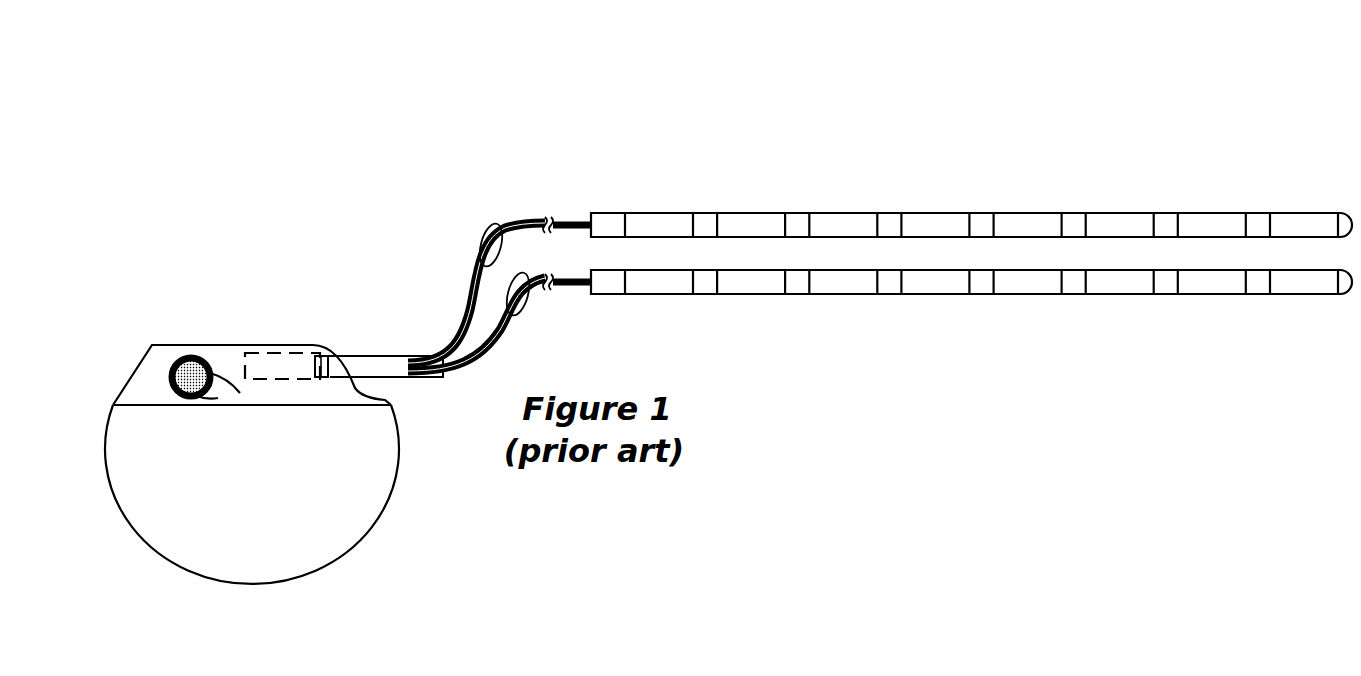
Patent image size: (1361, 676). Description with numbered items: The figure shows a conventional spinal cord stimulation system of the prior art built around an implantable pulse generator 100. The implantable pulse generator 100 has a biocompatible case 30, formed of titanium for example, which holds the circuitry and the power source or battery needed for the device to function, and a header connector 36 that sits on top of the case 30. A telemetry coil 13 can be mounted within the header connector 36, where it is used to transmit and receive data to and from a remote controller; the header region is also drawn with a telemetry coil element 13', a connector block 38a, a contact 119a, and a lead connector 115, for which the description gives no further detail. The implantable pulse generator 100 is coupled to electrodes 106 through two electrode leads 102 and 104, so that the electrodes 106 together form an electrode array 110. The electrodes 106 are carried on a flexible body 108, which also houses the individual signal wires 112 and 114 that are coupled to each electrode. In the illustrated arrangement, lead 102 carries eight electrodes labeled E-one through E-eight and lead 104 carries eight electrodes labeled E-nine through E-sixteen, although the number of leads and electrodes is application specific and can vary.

The implantable pulse generator 100 is at (205, 249).
The biocompatible case 30 is at (399, 462).
The header connector 36 is at (143, 358).
The telemetry coil 13 is at (188, 395).
The feedthrough pin 13' is at (175, 352).
The connector block 38a is at (273, 355).
The connector contact 119a is at (312, 355).
The lead connector 115 is at (307, 316).
The signal wire 112 is at (486, 232).
The signal wire 114 is at (528, 303).
The electrode array 110 is at (1099, 118).
The electrode lead 102 is at (635, 186).
The electrode lead 104 is at (676, 324).
The electrodes 106 is at (843, 212).
The flexible body 108 is at (703, 212).